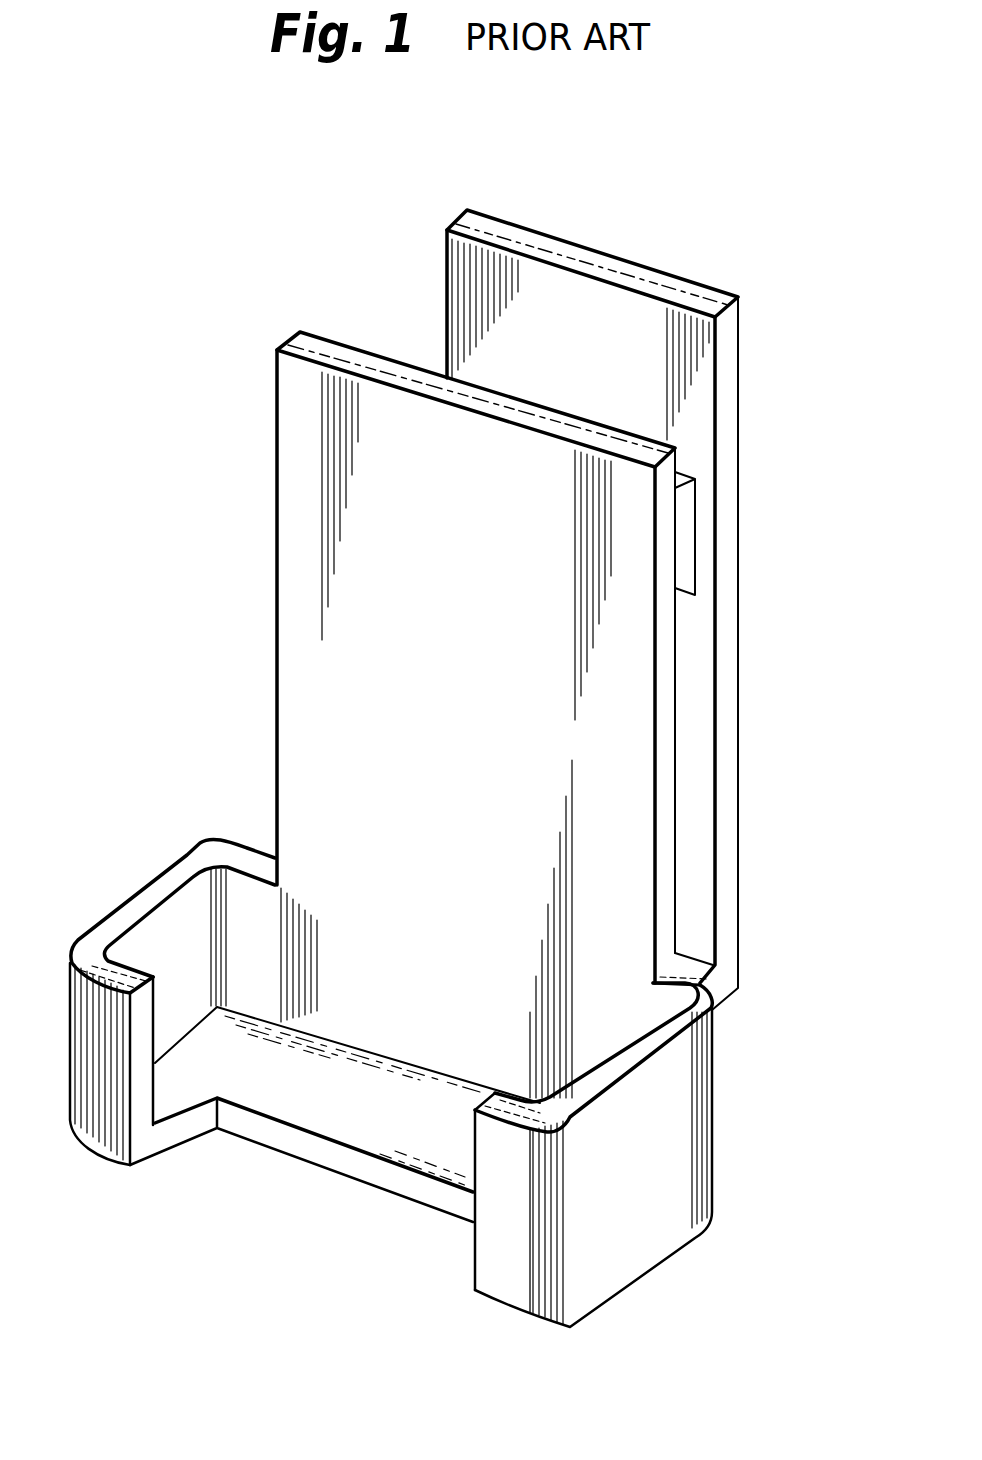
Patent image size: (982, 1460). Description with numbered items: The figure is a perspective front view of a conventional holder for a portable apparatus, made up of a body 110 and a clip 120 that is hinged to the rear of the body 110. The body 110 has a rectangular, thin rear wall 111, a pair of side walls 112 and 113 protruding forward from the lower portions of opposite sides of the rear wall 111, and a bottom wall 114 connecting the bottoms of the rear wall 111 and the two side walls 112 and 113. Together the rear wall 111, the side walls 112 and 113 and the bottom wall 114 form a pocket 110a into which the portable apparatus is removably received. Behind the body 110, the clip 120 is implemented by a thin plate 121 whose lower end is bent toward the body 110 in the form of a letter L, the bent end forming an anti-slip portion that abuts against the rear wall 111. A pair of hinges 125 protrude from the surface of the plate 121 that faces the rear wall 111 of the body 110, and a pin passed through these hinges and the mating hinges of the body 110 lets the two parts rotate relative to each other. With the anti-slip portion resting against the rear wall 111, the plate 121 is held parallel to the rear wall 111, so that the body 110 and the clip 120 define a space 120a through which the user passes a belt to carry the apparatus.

The body 110 is at (438, 829).
The pocket 110a is at (500, 1043).
The rear wall 111 is at (310, 626).
The side wall 112 is at (660, 1188).
The side wall 113 is at (157, 938).
The bottom wall 114 is at (347, 1127).
The clip 120 is at (655, 586).
The space 120a is at (700, 870).
The plate 121 is at (725, 750).
The hinges 125 is at (693, 547).